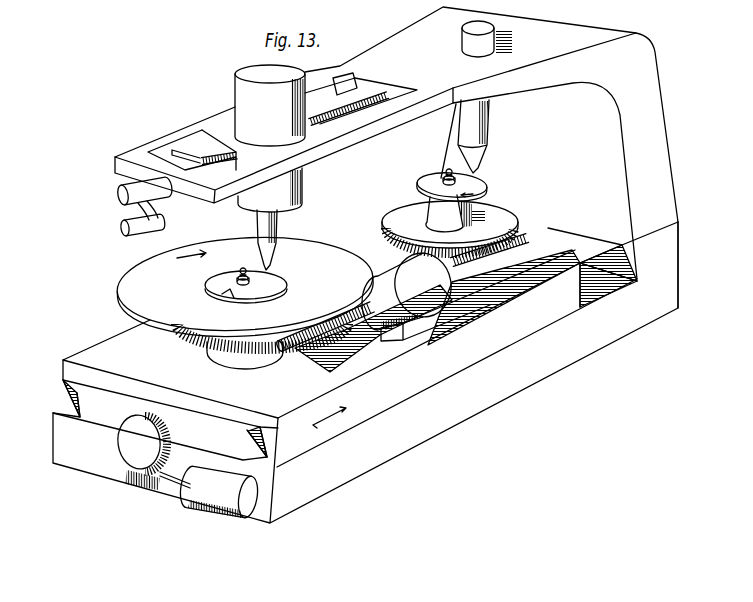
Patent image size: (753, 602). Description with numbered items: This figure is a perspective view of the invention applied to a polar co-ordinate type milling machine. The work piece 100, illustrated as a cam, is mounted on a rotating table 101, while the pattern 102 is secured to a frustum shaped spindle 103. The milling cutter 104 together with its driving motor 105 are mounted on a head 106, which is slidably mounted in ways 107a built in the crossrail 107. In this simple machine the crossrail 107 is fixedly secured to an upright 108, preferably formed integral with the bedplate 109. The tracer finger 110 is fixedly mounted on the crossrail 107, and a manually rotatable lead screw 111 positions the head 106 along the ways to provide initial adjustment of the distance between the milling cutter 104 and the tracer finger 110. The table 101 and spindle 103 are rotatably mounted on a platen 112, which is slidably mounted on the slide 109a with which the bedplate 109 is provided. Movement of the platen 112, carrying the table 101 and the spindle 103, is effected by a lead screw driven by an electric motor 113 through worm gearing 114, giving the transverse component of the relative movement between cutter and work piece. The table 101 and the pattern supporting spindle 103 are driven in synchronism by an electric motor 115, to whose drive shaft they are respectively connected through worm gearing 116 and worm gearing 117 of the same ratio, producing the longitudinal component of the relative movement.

The work piece 100 is at (232, 271).
The rotating table 101 is at (345, 265).
The pattern 102 is at (478, 185).
The frustum shaped spindle 103 is at (478, 205).
The milling cutter 104 is at (271, 266).
The driving motor 105 is at (240, 81).
The head 106 is at (222, 121).
The crossrail 107 is at (406, 28).
The ways 107a is at (396, 90).
The upright 108 is at (662, 124).
The bedplate 109 is at (637, 322).
The slide 109a is at (76, 392).
The tracer finger 110 is at (487, 136).
The manually rotatable lead screw 111 is at (199, 154).
The platen 112 is at (116, 344).
The electric motor 113 is at (200, 465).
The worm gearing 114 is at (126, 467).
The electric motor 115 is at (405, 270).
The worm gearing 116 is at (285, 350).
The worm gearing 117 is at (521, 232).